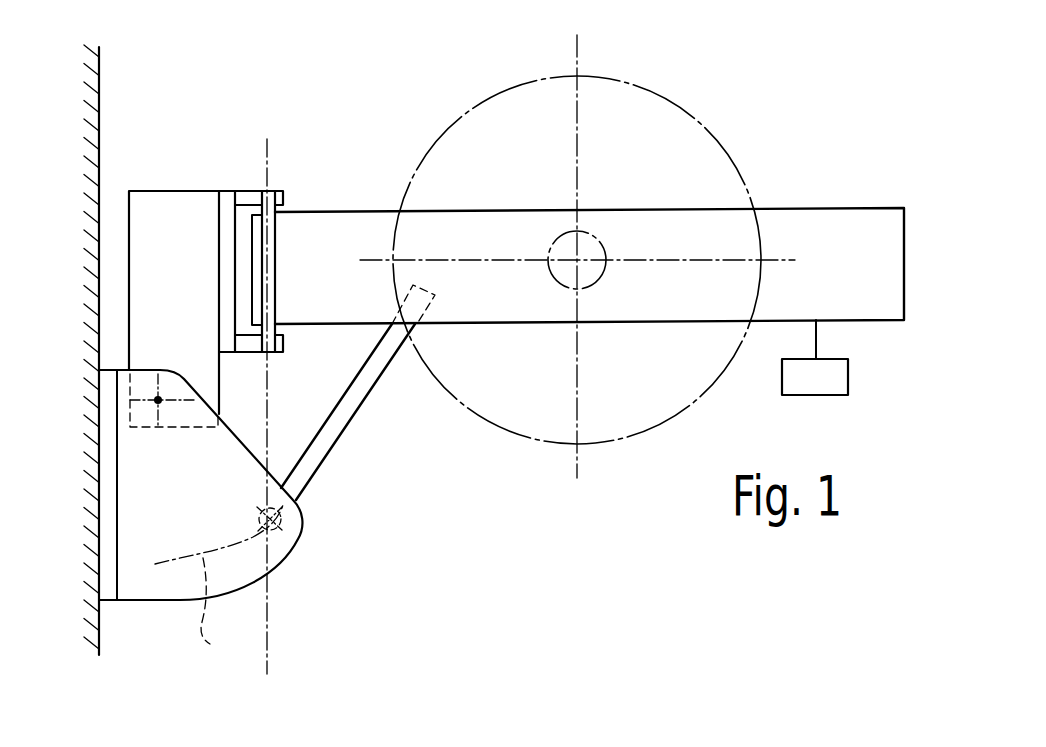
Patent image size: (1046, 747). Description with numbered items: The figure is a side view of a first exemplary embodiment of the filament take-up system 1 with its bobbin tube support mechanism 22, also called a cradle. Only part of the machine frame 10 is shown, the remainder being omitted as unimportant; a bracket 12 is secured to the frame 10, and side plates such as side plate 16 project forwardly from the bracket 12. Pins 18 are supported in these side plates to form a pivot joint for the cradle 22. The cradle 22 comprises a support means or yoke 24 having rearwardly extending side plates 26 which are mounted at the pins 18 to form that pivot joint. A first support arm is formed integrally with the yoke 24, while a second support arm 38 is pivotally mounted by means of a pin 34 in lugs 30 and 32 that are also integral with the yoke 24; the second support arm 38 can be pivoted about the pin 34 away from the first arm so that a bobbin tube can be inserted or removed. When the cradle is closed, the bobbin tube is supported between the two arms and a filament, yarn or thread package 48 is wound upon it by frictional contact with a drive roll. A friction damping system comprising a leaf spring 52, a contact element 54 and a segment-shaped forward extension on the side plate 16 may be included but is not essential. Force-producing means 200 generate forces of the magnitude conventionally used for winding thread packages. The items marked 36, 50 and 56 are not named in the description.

The filament take-up system 1 is at (502, 55).
The machine frame 10 is at (100, 643).
The bracket 12 is at (110, 488).
The side plate 16 is at (145, 534).
The pin 18 is at (145, 400).
The bobbin tube support mechanism 22 is at (347, 92).
The yoke 24 is at (227, 198).
The side plate 26 is at (158, 202).
The lug 30 is at (283, 197).
The lug 32 is at (285, 345).
The pin 34 is at (277, 237).
The axis 36 is at (270, 604).
The second support arm 38 is at (816, 214).
The thread package 48 is at (680, 70).
The pivoting direction arrow 50 is at (250, 455).
The leaf spring 52 is at (335, 428).
The contact element 54 is at (276, 522).
The guide 56 is at (224, 610).
The force-producing means 200 is at (842, 375).